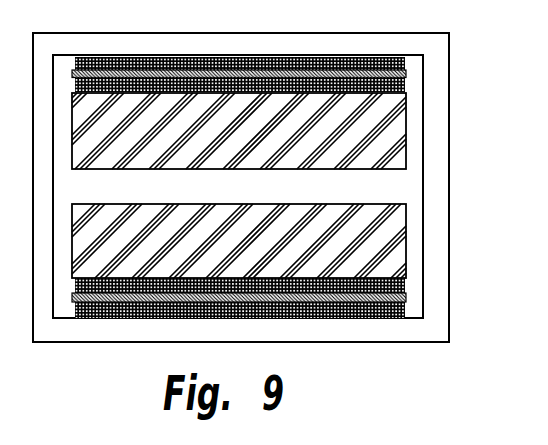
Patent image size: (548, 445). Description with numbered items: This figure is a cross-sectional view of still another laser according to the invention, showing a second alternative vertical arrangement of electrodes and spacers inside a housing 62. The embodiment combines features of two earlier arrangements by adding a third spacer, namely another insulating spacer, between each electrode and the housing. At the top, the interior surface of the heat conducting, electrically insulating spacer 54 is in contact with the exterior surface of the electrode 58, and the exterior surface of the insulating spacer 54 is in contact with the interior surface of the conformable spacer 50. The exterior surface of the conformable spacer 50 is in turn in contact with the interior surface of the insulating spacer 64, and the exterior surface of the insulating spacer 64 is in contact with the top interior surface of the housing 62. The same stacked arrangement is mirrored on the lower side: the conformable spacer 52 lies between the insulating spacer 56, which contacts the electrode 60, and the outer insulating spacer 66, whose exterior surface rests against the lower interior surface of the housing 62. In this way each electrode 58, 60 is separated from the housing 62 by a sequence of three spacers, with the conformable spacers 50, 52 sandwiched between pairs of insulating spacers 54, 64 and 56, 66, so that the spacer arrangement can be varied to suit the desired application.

The conformable spacer 50 is at (406, 73).
The conformable spacer 52 is at (406, 298).
The insulating spacer 54 is at (406, 88).
The insulating spacer 56 is at (406, 285).
The electrode 58 is at (406, 144).
The electrode 60 is at (406, 248).
The housing 62 is at (449, 186).
The insulating spacer 64 is at (406, 62).
The insulating spacer 66 is at (406, 311).